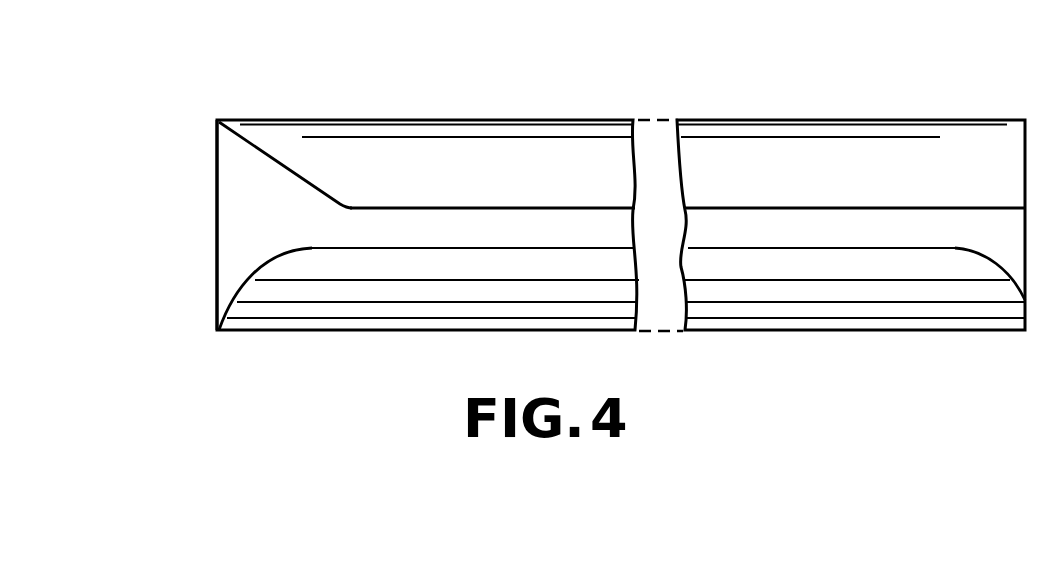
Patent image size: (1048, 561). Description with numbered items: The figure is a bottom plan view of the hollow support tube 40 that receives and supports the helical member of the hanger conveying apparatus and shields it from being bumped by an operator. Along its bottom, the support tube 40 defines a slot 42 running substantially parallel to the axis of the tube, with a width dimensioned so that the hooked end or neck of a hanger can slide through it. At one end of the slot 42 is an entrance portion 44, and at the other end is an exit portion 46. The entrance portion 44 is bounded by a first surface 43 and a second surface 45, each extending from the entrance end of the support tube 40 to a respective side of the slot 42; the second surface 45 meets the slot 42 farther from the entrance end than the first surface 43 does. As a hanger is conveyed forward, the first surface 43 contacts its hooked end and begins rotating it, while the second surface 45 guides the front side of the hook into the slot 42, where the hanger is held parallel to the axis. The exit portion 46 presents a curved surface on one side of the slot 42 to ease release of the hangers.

The support tube 40 is at (749, 113).
The slot 42 is at (505, 207).
The first surface 43 is at (279, 260).
The entrance portion 44 is at (208, 225).
The second surface 45 is at (295, 170).
The exit portion 46 is at (1006, 204).